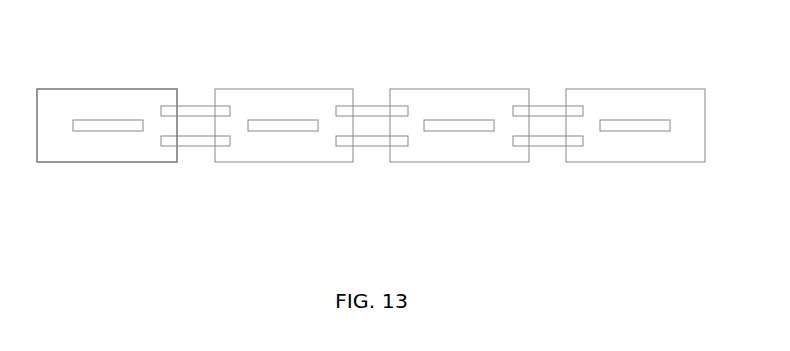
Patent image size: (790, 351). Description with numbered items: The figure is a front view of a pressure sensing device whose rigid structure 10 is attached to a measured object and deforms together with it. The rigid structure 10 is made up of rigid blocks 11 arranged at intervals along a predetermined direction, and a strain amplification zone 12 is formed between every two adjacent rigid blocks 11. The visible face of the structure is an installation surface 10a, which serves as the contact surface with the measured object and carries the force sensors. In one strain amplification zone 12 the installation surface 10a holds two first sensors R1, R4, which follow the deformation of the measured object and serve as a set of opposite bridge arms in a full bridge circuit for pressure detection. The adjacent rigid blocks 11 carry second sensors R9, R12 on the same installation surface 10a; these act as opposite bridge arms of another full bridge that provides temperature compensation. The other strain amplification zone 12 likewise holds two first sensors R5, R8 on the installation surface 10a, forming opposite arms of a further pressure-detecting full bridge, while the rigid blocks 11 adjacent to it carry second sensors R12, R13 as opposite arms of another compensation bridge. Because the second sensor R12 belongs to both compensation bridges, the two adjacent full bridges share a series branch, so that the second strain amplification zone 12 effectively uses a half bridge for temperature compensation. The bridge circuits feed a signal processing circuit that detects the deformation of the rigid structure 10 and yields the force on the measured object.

The rigid structure 10 is at (87, 87).
The installation surface 10a is at (59, 140).
The rigid block 11 is at (148, 110).
The strain amplification zone 12 is at (375, 158).
The first sensor R1 is at (193, 143).
The first sensor R4 is at (196, 110).
The first sensor R5 is at (379, 142).
The first sensor R8 is at (371, 110).
The second sensor R9 is at (110, 126).
The second sensor R12 is at (277, 124).
The second sensor R13 is at (448, 124).